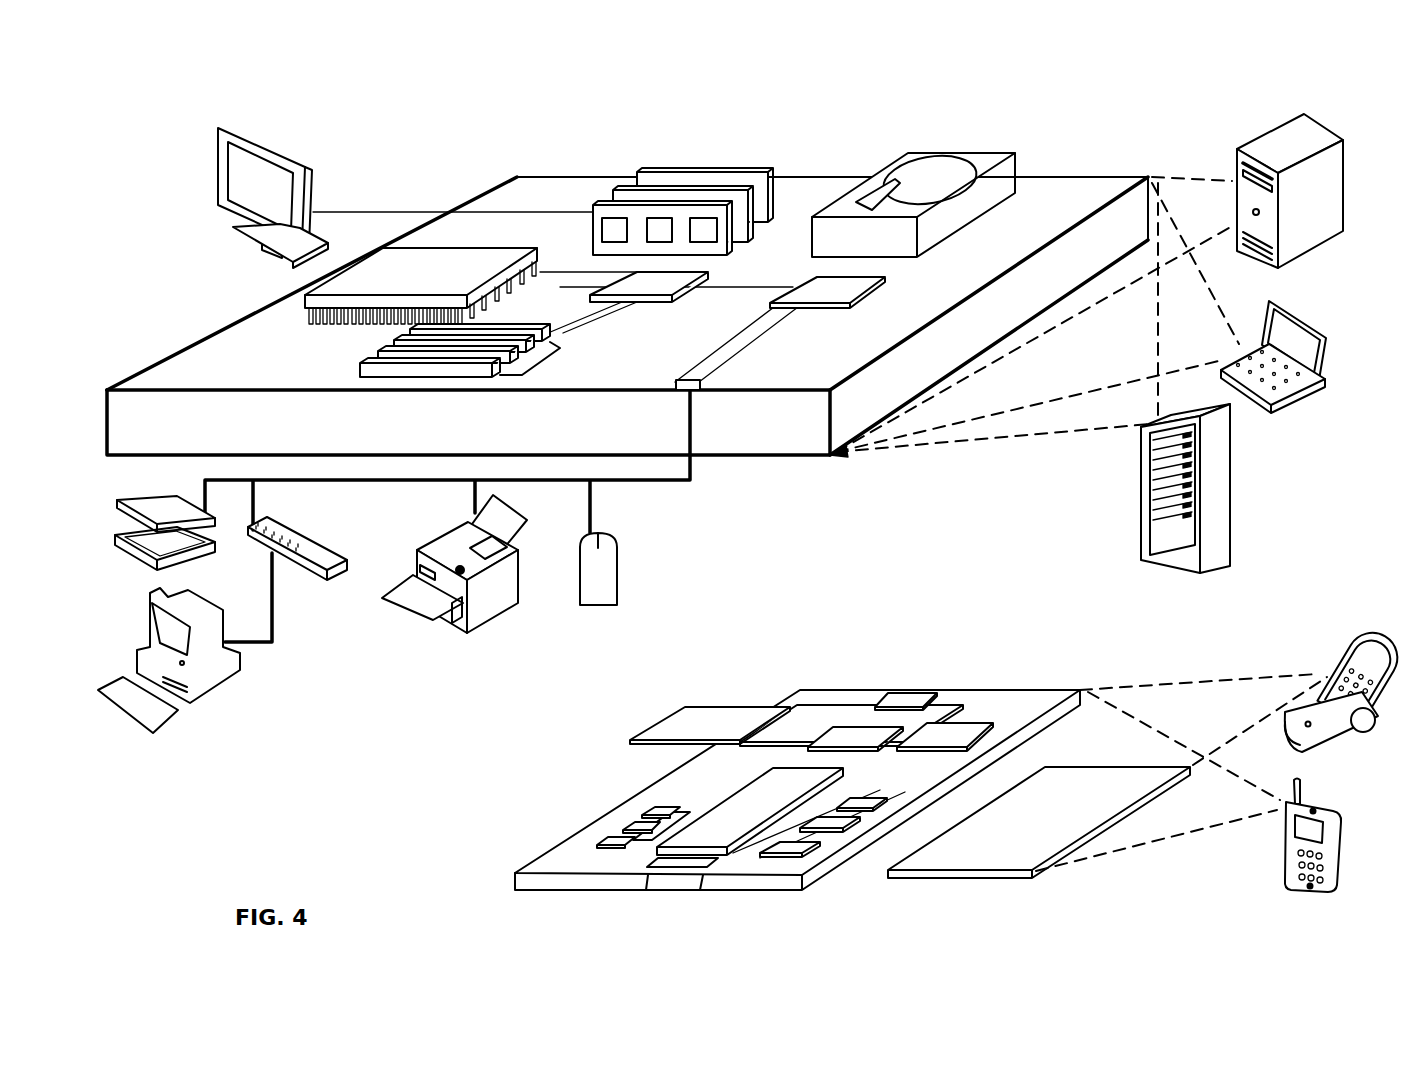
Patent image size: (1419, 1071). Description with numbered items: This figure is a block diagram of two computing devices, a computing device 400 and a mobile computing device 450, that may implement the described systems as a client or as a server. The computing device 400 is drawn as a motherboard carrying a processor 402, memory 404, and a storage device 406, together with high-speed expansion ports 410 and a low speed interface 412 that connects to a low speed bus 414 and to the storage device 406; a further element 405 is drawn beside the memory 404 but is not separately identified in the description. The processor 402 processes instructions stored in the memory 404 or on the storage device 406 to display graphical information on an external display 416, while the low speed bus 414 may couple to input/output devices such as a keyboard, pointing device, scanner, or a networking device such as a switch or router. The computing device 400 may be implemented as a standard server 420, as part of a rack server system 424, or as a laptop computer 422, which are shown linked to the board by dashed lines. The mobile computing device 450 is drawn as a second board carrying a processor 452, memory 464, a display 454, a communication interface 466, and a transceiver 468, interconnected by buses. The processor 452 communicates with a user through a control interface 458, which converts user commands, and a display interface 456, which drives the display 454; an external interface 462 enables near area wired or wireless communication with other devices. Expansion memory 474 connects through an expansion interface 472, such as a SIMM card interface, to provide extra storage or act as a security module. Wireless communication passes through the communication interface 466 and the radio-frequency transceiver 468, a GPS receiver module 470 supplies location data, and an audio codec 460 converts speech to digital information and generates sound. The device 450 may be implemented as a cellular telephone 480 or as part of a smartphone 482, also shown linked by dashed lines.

The computing device 400 is at (1336, 98).
The processor 402 is at (300, 305).
The memory 404 is at (667, 168).
The additional memory modules 405 is at (636, 177).
The storage device 406 is at (913, 155).
The high-speed expansion ports 410 is at (385, 350).
The low speed interface 412 is at (815, 290).
The low speed bus 414 is at (702, 392).
The display 416 is at (231, 127).
The standard server 420 is at (1252, 138).
The laptop computer 422 is at (1282, 402).
The rack server system 424 is at (1142, 531).
The computing device 450 is at (503, 778).
The processor 452 is at (727, 832).
The display 454 is at (1007, 852).
The display interface 456 is at (787, 847).
The control interface 458 is at (833, 830).
The audio codec 460 is at (873, 797).
The external interface 462 is at (673, 877).
The memory 464 is at (627, 825).
The communication interface 466 is at (856, 728).
The transceiver 468 is at (963, 733).
The GPS receiver module 470 is at (925, 693).
The expansion interface 472 is at (777, 703).
The expansion memory 474 is at (672, 713).
The cellular telephone 480 is at (1357, 655).
The smartphone 482 is at (1283, 843).